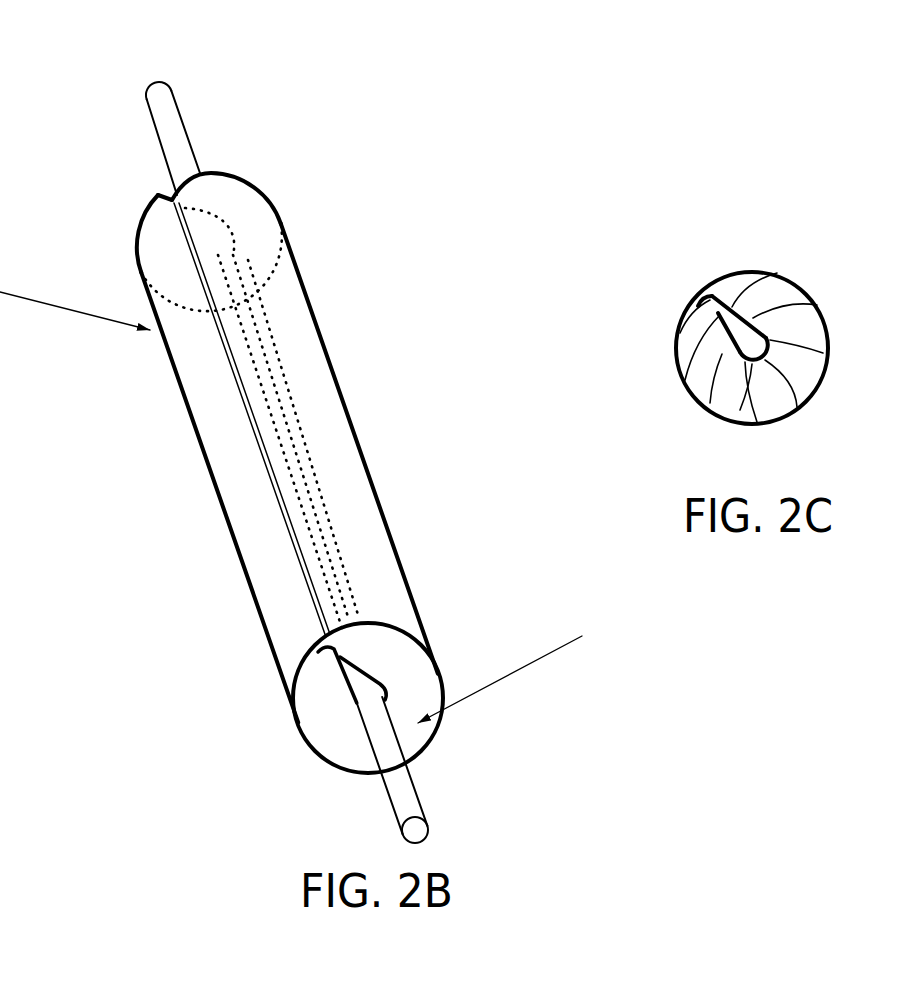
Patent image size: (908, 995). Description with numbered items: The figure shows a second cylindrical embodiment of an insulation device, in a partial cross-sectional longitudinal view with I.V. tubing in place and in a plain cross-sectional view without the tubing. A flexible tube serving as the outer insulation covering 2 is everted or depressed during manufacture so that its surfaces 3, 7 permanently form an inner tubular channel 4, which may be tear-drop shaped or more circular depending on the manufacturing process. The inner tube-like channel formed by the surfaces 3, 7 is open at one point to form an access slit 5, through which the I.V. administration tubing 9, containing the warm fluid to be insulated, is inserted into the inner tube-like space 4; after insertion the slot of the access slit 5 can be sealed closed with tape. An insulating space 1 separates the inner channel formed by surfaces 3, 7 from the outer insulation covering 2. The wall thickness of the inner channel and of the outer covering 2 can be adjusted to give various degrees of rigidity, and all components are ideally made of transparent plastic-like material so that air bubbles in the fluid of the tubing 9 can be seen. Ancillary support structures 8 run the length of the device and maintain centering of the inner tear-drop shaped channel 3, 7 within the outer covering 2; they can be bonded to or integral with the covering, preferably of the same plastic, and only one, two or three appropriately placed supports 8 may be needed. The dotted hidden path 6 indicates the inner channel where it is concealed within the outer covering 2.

In FIG. 2C, the insulating space 1 is at (733, 393).
In FIG. 2B, the outer insulation covering 2 is at (390, 498).
In FIG. 2C, the outer insulation covering 2 is at (807, 288).
In FIG. 2B, the inner channel surface 3 is at (373, 670).
In FIG. 2C, the inner channel surface 3 is at (745, 313).
In FIG. 2C, the inner tubular channel 4 is at (752, 343).
In FIG. 2B, the access slit 5 is at (272, 492).
In FIG. 2C, the access slit 5 is at (708, 290).
In FIG. 2B, the hidden spiral slit path 6 is at (272, 340).
In FIG. 2B, the inner channel surface 7 is at (396, 692).
In FIG. 2C, the inner channel surface 7 is at (762, 368).
In FIG. 2C, the ancillary support structures 8 is at (793, 333).
In FIG. 2B, the I.V. administration tubing 9 is at (198, 130).